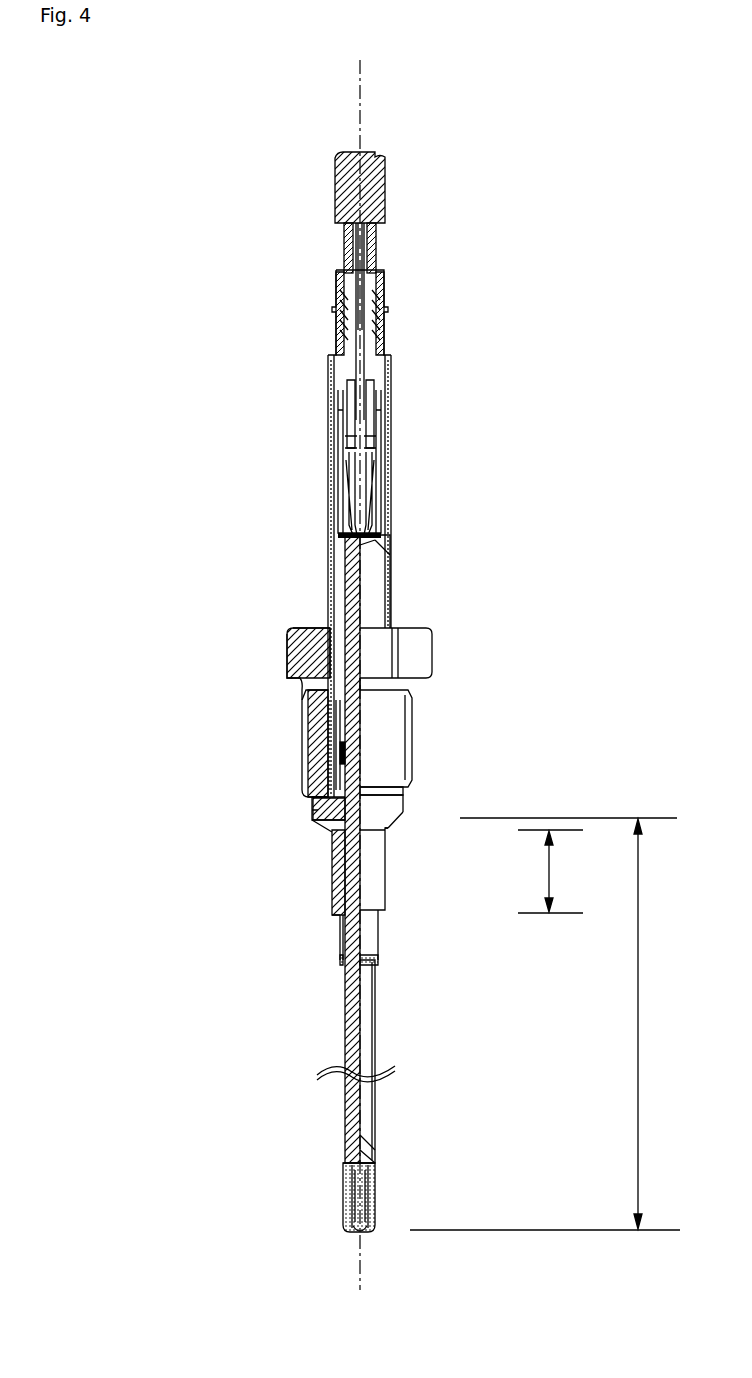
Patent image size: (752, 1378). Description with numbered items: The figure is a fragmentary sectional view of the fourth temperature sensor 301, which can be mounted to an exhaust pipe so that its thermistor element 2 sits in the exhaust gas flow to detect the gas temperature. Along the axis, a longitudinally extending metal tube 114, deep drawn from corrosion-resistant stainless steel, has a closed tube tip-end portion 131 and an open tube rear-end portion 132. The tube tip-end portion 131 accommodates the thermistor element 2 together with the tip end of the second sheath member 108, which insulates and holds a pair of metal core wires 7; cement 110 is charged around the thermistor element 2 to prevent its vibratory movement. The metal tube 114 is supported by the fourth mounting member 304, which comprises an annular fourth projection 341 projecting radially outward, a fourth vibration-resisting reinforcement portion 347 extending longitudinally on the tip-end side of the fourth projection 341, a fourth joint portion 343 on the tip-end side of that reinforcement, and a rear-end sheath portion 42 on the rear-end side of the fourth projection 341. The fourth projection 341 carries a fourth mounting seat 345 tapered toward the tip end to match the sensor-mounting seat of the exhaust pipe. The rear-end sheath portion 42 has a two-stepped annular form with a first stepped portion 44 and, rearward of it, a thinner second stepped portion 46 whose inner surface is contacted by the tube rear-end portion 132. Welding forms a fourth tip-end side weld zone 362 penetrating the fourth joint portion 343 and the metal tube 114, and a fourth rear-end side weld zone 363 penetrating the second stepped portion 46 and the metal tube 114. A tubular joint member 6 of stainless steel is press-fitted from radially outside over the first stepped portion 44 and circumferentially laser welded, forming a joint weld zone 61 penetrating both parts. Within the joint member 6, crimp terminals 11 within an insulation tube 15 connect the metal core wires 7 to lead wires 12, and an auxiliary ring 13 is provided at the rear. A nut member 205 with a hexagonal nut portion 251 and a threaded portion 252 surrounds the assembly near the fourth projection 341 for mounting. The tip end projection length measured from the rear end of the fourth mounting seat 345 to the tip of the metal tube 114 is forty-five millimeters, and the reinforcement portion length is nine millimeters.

The fourth temperature sensor 301 is at (152, 290).
The lead wires 12 is at (341, 238).
The auxiliary ring 13 is at (385, 283).
The crimp terminals 11 is at (335, 448).
The insulation tube 15 is at (392, 483).
The metal core wires 7 is at (330, 513).
The joint member 6 is at (329, 570).
The nut member 205 is at (509, 632).
The hexagonal nut portion 251 is at (432, 652).
The threaded portion 252 is at (417, 705).
The joint weld zone 61 is at (380, 795).
The fourth rear-end side weld zone 363 is at (348, 753).
The tube rear-end portion 132 is at (331, 722).
The rear-end sheath portion 42 is at (246, 712).
The second stepped portion 46 is at (332, 734).
The first stepped portion 44 is at (340, 758).
The fourth mounting member 304 is at (200, 718).
The fourth projection 341 is at (313, 812).
The fourth mounting seat 345 is at (320, 826).
The fourth vibration-resisting reinforcement portion 347 is at (335, 880).
The fourth joint portion 343 is at (340, 925).
The fourth tip-end side weld zone 362 is at (342, 958).
The second sheath member 108 is at (343, 1012).
The metal tube 114 is at (343, 1102).
The cement 110 is at (343, 1193).
The thermistor element 2 is at (343, 1222).
The tube tip-end portion 131 is at (368, 1232).